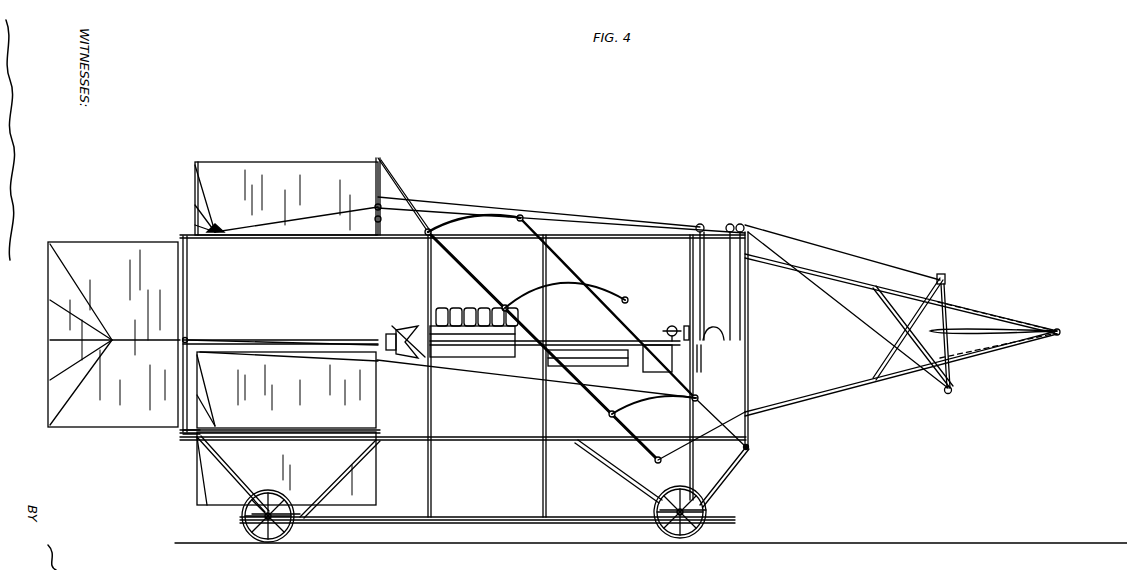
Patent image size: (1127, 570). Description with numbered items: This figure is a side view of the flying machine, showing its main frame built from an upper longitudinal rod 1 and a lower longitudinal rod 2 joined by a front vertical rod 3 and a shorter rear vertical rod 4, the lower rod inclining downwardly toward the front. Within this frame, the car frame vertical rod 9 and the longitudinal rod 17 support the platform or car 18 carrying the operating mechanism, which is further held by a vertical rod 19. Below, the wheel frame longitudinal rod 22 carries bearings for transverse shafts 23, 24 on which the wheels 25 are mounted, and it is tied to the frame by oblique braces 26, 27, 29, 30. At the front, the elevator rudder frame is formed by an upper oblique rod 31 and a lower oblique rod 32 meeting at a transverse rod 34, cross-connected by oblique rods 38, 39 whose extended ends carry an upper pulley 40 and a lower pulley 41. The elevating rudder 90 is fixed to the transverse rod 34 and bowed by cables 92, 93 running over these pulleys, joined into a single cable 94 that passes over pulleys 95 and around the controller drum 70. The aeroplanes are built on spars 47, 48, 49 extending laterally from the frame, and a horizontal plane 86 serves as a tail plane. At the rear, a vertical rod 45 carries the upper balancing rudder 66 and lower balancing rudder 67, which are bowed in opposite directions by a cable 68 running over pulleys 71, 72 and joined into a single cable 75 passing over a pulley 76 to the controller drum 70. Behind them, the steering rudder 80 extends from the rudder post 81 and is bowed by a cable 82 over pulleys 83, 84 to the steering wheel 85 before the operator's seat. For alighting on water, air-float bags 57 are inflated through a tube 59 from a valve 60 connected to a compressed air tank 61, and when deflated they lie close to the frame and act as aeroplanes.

The upper longitudinal rod 1 is at (398, 232).
The lower longitudinal rod 2 is at (468, 440).
The front vertical rod 3 is at (749, 318).
The rear vertical rod 4 is at (183, 420).
The car frame vertical rod 9 is at (432, 410).
The longitudinal rod 17 is at (593, 338).
The platform or car 18 is at (524, 343).
The vertical rod 19 is at (542, 414).
The wheel frame longitudinal rod 22 is at (460, 517).
The transverse shaft 23 is at (252, 520).
The transverse shaft 24 is at (704, 510).
The wheel 25 is at (290, 527).
The oblique brace 26 is at (620, 468).
The oblique brace 27 is at (360, 464).
The oblique brace 29 is at (726, 475).
The oblique brace 30 is at (205, 466).
The upper oblique rod 31 is at (820, 270).
The lower oblique rod 32 is at (816, 394).
The transverse rod 34 is at (1066, 326).
The oblique rod 38 is at (848, 310).
The oblique rod 39 is at (905, 337).
The upper pulley 40 is at (945, 276).
The lower pulley 41 is at (952, 390).
The vertical rod 45 is at (390, 170).
The main aeroplane spar 47 is at (749, 448).
The rear spar 48 is at (470, 277).
The front spar 49 is at (568, 262).
The air-float bag 57 is at (438, 524).
The tube 59 is at (690, 435).
The valve 60 is at (684, 326).
The compressed air tank 61 is at (588, 356).
The upper balancing rudder 66 is at (286, 198).
The lower balancing rudder 67 is at (287, 390).
The cable 68 is at (316, 217).
The controller drum 70 is at (712, 343).
The pulley 71 is at (225, 222).
The pulley 72 is at (375, 204).
The single cable 75 is at (533, 214).
The pulley 76 is at (700, 272).
The steering rudder 80 is at (113, 334).
The rudder post 81 is at (187, 328).
The cable 82 is at (148, 338).
The pulley 83 is at (210, 340).
The pulley 84 is at (600, 349).
The steering wheel 85 is at (702, 370).
The horizontal plane 86 is at (285, 340).
The elevating rudder 90 is at (993, 323).
The cable 92 is at (945, 293).
The cable 93 is at (947, 370).
The single cable 94 is at (795, 238).
The pulley 95 is at (735, 272).